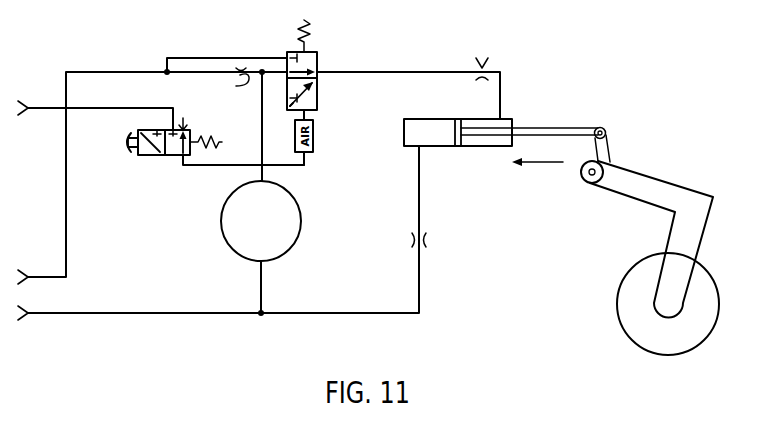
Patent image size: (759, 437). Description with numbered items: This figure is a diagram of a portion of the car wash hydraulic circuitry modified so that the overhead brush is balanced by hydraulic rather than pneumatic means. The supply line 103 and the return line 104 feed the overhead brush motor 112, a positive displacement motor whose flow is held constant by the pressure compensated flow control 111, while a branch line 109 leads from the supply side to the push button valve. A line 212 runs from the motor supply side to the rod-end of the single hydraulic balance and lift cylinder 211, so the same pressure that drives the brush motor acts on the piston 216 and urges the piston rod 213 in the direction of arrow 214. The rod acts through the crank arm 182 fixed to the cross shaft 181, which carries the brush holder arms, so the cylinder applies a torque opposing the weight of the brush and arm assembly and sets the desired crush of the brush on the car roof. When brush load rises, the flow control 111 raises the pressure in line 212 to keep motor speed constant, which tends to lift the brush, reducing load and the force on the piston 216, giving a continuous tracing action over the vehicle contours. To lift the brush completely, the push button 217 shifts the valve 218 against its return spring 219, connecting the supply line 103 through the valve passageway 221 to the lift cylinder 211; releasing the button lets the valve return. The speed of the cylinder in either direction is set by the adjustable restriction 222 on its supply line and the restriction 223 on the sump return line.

The supply line 103 is at (66, 248).
The line 104 is at (163, 312).
The conductor to valve 109 is at (130, 108).
The pressure compensated flow control 111 is at (237, 88).
The overhead brush motor 112 is at (302, 220).
The cross shaft 181 is at (590, 185).
The crank arm 182 is at (612, 157).
The hydraulic balance and lift cylinder 211 is at (445, 119).
The line 212 is at (301, 88).
The piston rod 213 is at (523, 128).
The arrow 214 is at (563, 162).
The piston 216 is at (461, 146).
The push button 217 is at (130, 148).
The valve 218 is at (317, 88).
The return spring 219 is at (310, 29).
The valve passageway 221 is at (289, 90).
The adjustable restriction 222 is at (483, 57).
The restriction 223 is at (429, 244).